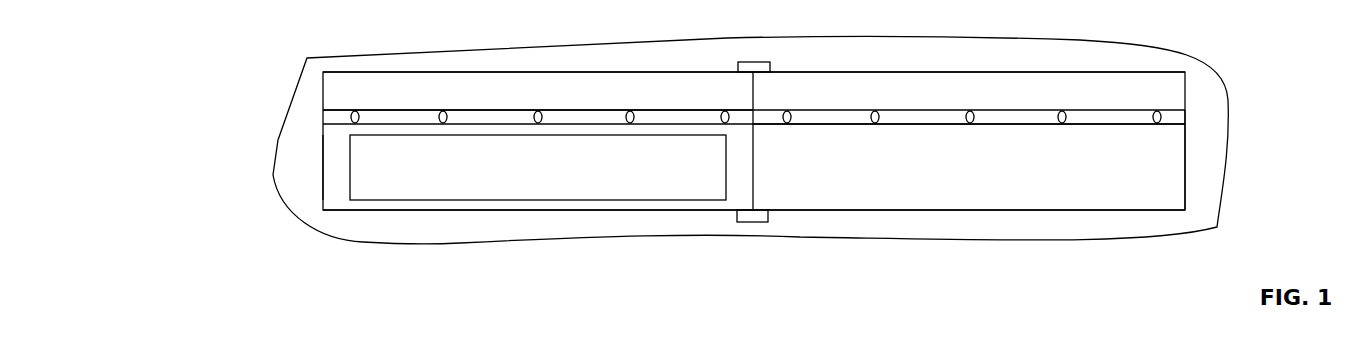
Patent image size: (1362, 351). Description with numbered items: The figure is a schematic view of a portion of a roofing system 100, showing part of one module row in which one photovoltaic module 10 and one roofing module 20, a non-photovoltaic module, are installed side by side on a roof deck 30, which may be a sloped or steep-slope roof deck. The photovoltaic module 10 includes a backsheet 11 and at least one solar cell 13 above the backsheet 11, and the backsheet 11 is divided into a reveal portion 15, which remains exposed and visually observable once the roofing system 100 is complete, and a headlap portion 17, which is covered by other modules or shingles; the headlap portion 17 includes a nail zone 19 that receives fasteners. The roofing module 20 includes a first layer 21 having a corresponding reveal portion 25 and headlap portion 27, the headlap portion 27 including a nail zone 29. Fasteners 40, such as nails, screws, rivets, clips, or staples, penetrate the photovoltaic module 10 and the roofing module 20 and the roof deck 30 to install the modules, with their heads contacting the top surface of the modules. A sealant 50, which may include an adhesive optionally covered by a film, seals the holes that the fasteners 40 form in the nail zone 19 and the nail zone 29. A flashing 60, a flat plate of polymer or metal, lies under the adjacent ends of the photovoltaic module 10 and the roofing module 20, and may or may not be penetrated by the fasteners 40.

The roofing system 100 is at (230, 50).
The photovoltaic module 10 is at (340, 165).
The backsheet 11 is at (348, 211).
The solar cell 13 is at (632, 177).
The reveal portion 15 is at (335, 187).
The headlap portion 17 is at (322, 90).
The nail zone 19 is at (322, 118).
The roofing module 20 is at (1100, 198).
The first layer 21 is at (1158, 153).
The reveal portion 25 is at (1192, 190).
The headlap portion 27 is at (1130, 94).
The nail zone 29 is at (1188, 115).
The roof deck 30 is at (862, 69).
The fasteners 40 is at (538, 108).
The sealant 50 is at (705, 120).
The flashing 60 is at (753, 226).